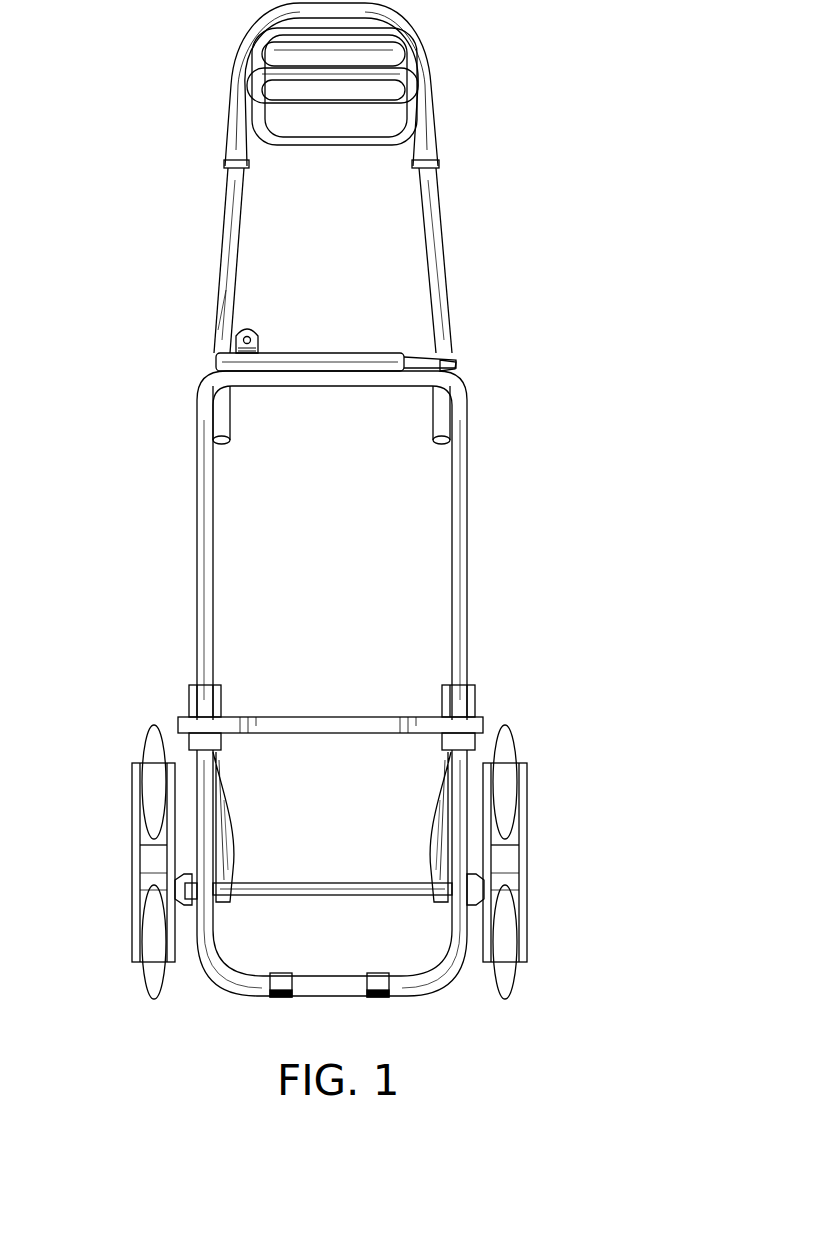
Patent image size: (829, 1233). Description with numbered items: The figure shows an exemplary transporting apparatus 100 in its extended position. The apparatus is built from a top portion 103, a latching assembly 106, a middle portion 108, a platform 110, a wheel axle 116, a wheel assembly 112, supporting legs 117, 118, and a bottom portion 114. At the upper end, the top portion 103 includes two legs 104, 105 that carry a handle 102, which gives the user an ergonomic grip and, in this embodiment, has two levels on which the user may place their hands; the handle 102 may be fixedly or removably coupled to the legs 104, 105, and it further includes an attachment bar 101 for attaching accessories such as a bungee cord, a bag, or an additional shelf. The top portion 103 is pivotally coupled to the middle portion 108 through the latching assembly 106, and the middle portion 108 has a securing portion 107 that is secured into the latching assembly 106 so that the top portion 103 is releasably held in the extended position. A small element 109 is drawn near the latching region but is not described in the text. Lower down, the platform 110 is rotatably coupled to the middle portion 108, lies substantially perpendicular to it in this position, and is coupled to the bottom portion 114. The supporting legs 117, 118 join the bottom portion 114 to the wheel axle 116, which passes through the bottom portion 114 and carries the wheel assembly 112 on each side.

The transporting apparatus 100 is at (147, 83).
The attachment bar 101 is at (337, 139).
The handle 102 is at (430, 82).
The top portion 103 is at (227, 87).
The leg 104 is at (435, 254).
The leg 105 is at (222, 303).
The latching assembly 106 is at (443, 367).
The securing portion 107 is at (250, 377).
The middle portion 108 is at (458, 537).
The clip 109 is at (250, 330).
The platform 110 is at (182, 718).
The wheel assembly 112 is at (128, 727).
The bottom portion 114 is at (443, 967).
The wheel axle 116 is at (330, 883).
The supporting leg 117 is at (223, 812).
The supporting leg 118 is at (412, 862).